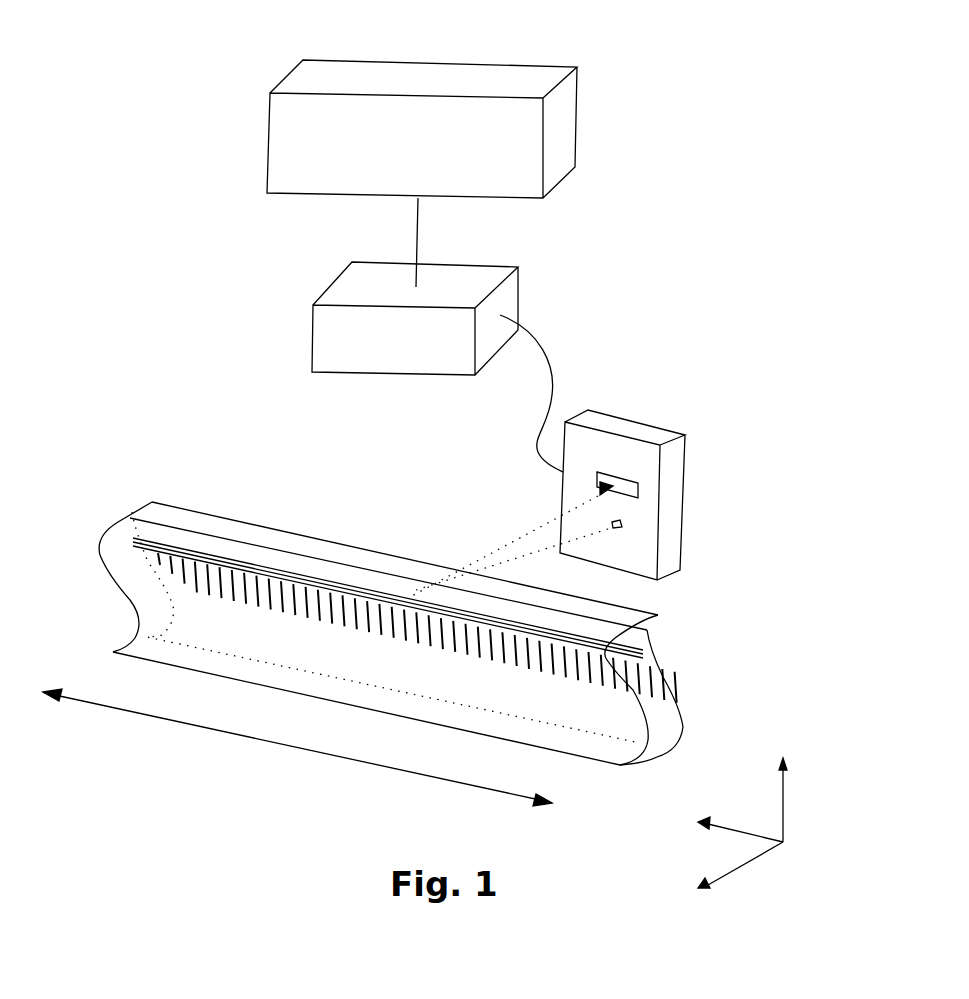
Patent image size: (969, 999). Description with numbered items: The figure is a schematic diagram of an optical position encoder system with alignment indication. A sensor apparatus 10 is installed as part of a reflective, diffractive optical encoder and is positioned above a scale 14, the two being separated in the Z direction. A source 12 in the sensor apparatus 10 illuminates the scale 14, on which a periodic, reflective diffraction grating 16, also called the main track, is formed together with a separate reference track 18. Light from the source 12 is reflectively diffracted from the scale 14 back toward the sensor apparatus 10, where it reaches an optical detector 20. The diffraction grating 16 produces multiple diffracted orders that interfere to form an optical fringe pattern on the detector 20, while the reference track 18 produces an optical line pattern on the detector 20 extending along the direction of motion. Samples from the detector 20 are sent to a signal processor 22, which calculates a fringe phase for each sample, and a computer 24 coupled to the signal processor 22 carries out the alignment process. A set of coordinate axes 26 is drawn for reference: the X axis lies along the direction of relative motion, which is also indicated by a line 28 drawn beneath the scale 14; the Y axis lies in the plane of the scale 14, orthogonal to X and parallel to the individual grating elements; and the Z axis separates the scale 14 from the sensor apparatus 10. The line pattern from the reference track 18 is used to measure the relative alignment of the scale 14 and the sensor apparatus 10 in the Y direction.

The sensor apparatus 10 is at (600, 418).
The source 12 is at (622, 524).
The scale 14 is at (202, 528).
The diffraction grating 16 is at (628, 677).
The reference track 18 is at (630, 648).
The optical detector 20 is at (635, 483).
The signal processor 22 is at (467, 282).
The computer 24 is at (517, 65).
The coordinate axes 26 is at (783, 877).
The line 28 is at (210, 730).